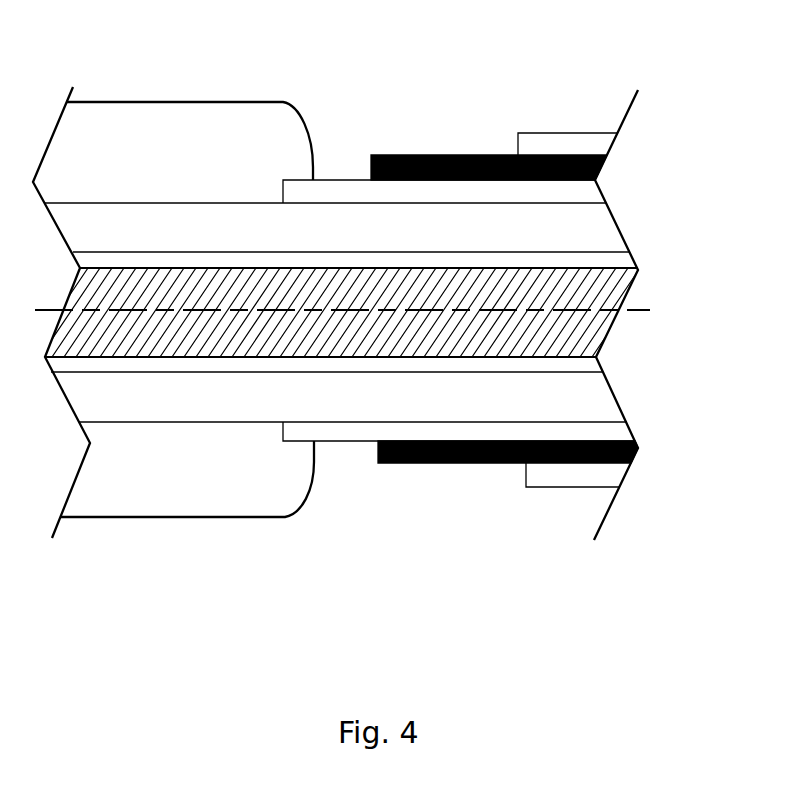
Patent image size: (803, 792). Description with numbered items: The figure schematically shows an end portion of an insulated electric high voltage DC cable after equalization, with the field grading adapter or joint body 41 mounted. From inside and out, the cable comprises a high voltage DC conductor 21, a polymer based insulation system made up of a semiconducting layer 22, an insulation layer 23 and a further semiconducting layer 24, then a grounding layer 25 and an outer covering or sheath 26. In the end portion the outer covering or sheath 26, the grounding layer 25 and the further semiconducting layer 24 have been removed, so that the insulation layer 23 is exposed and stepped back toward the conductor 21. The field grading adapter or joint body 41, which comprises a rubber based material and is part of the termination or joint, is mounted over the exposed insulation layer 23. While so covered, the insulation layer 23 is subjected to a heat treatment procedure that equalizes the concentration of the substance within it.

The substrate 21 is at (608, 301).
The buffer layer 22 is at (628, 267).
The insulating layer 23 is at (607, 243).
The conductive layer 24 is at (590, 197).
The electrode 25 is at (485, 155).
The contact layer 26 is at (598, 133).
The housing 41 is at (271, 102).